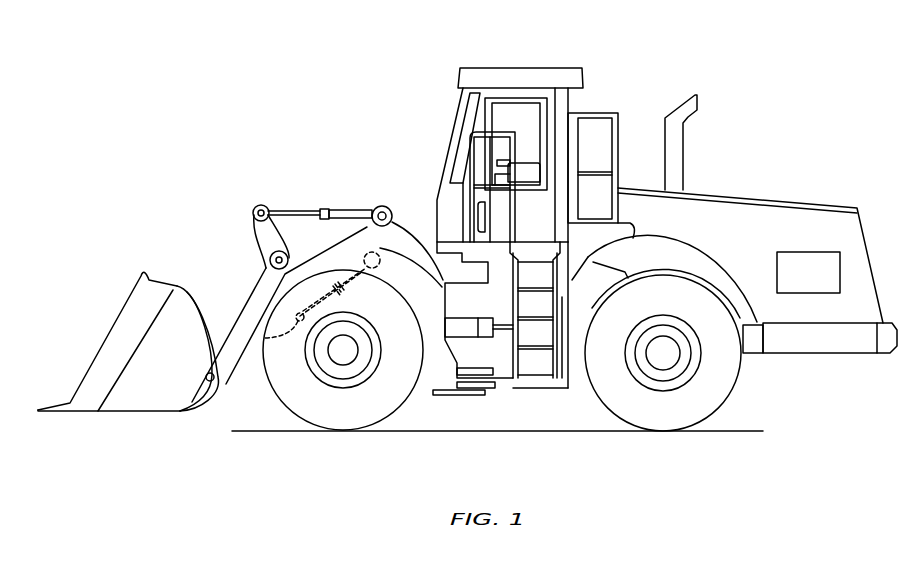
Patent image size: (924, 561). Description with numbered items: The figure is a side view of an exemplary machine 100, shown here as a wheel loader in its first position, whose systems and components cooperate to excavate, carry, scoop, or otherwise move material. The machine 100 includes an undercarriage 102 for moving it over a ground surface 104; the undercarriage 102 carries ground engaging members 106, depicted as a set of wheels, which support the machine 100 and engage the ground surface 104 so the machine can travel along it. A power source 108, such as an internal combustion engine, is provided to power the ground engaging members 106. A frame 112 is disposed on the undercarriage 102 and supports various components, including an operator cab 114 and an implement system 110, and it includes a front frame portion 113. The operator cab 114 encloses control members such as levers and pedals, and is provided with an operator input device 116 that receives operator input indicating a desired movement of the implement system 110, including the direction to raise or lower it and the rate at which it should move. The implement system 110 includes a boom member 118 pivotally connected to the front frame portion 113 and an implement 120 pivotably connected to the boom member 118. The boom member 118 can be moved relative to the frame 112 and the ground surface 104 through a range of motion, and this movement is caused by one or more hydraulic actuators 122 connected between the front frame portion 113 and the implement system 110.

The machine 100 is at (832, 52).
The undercarriage 102 is at (527, 392).
The ground surface 104 is at (717, 435).
The ground engaging members 106 is at (401, 407).
The power source 108 is at (841, 272).
The implement system 110 is at (212, 308).
The frame 112 is at (792, 205).
The front frame portion 113 is at (418, 257).
The operator cab 114 is at (524, 68).
The operator input device 116 is at (504, 166).
The boom member 118 is at (233, 376).
The implement 120 is at (94, 363).
The hydraulic actuators 122 is at (381, 252).